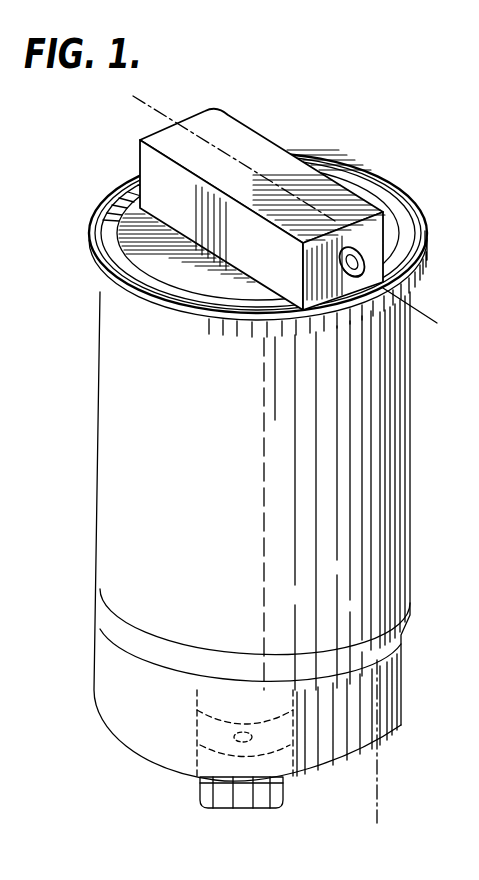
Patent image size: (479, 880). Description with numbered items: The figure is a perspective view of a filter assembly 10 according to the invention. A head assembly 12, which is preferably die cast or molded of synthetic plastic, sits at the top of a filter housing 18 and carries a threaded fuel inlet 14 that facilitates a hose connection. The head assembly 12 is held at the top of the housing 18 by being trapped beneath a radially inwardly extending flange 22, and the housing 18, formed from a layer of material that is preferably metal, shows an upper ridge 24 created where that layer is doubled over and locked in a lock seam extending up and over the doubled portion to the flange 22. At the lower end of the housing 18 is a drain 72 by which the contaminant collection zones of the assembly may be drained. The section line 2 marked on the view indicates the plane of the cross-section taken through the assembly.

The section line 2- 2 is at (128, 104).
The filter assembly 10 is at (72, 421).
The head assembly 12 is at (259, 132).
The fuel inlet 14 is at (366, 282).
The filter housing 18 is at (411, 433).
The radially inwardly extending flange 22 is at (113, 220).
The upper ridge 24 is at (405, 193).
The drain 72 is at (274, 808).